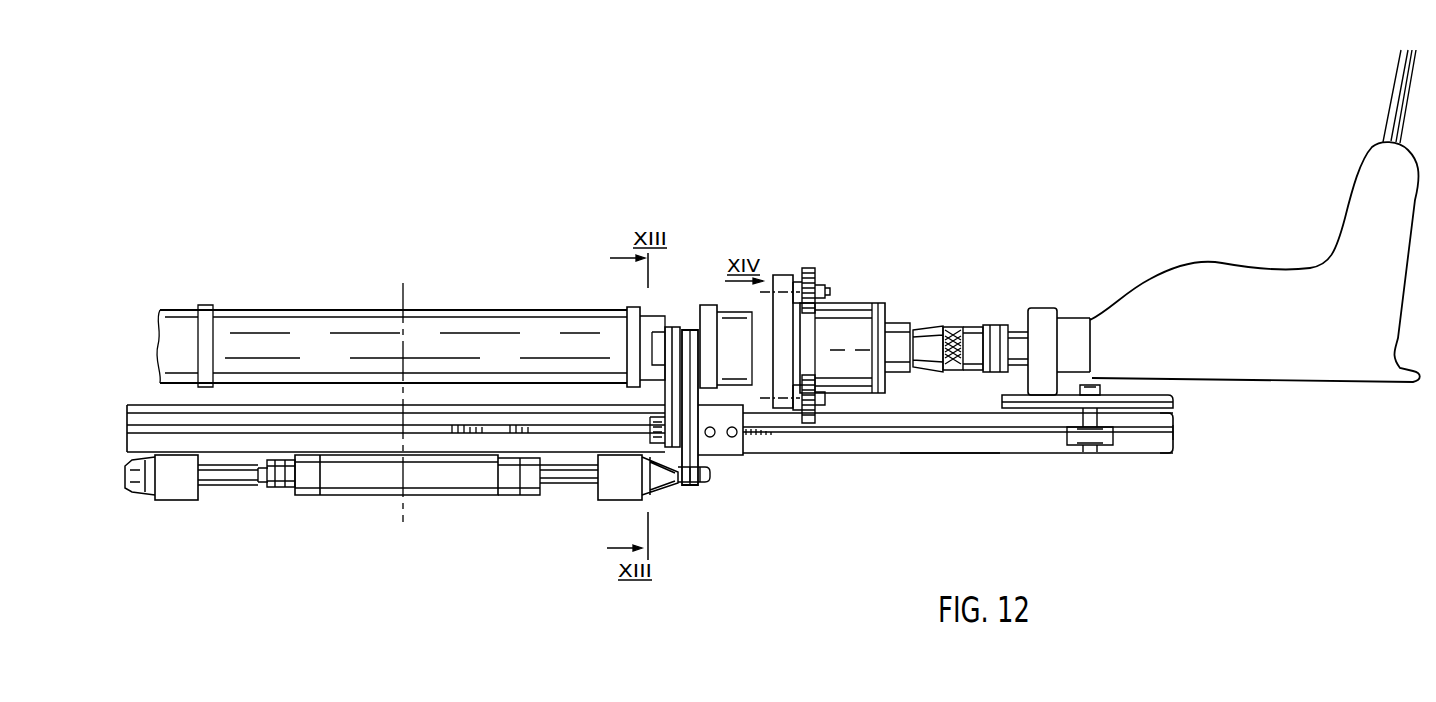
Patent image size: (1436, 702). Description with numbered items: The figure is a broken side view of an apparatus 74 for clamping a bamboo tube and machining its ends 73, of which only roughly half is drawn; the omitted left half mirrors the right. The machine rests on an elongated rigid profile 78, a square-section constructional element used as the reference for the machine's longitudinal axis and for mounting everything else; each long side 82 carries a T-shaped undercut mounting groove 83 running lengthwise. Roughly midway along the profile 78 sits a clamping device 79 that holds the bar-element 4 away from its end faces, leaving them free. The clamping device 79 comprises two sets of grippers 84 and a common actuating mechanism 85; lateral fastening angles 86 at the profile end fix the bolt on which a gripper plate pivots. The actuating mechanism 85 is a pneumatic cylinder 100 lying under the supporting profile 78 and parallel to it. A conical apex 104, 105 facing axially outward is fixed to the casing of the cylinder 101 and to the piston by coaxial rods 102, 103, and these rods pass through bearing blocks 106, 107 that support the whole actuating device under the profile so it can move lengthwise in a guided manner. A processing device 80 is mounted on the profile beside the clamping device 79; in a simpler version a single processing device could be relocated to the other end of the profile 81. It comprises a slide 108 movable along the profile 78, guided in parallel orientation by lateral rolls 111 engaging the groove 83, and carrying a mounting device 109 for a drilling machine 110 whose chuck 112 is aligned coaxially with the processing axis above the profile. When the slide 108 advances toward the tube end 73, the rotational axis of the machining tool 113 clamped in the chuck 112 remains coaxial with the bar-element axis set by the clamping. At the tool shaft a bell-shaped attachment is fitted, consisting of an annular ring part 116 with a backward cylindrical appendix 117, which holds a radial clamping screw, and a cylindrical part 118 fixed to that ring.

The bar-element 4 is at (463, 318).
The end of the bar-element 73 is at (698, 313).
The apparatus for machining the ends 74 is at (641, 120).
The profile 78 is at (1152, 450).
The clamping device 79 is at (723, 493).
The processing device 80 is at (986, 222).
The end of the profile 81 is at (1175, 430).
The long side of the profile 82 is at (852, 448).
The mounting groove 83 is at (935, 432).
The set of grippers 84 is at (711, 222).
The actuating mechanism 85 is at (437, 514).
The fastening angle 86 is at (738, 448).
The pneumatic cylinder 100 is at (354, 511).
The casing of the cylinder 101 is at (478, 495).
The rod 102 is at (232, 483).
The rod 103 is at (565, 485).
The conical apex 104 is at (138, 492).
The conical apex 105 is at (665, 485).
The bearing block 106 is at (178, 497).
The bearing block 107 is at (617, 490).
The slide 108 is at (1137, 400).
The device for mounting a drilling machine 109 is at (1040, 318).
The drilling machine 110 is at (1208, 272).
The lateral roll 111 is at (1070, 437).
The chuck 112 is at (972, 335).
The machining tool 113 is at (862, 289).
The annular ring part 116 is at (880, 300).
The cylindrical appendix 117 is at (900, 330).
The cylindrical part 118 is at (840, 297).